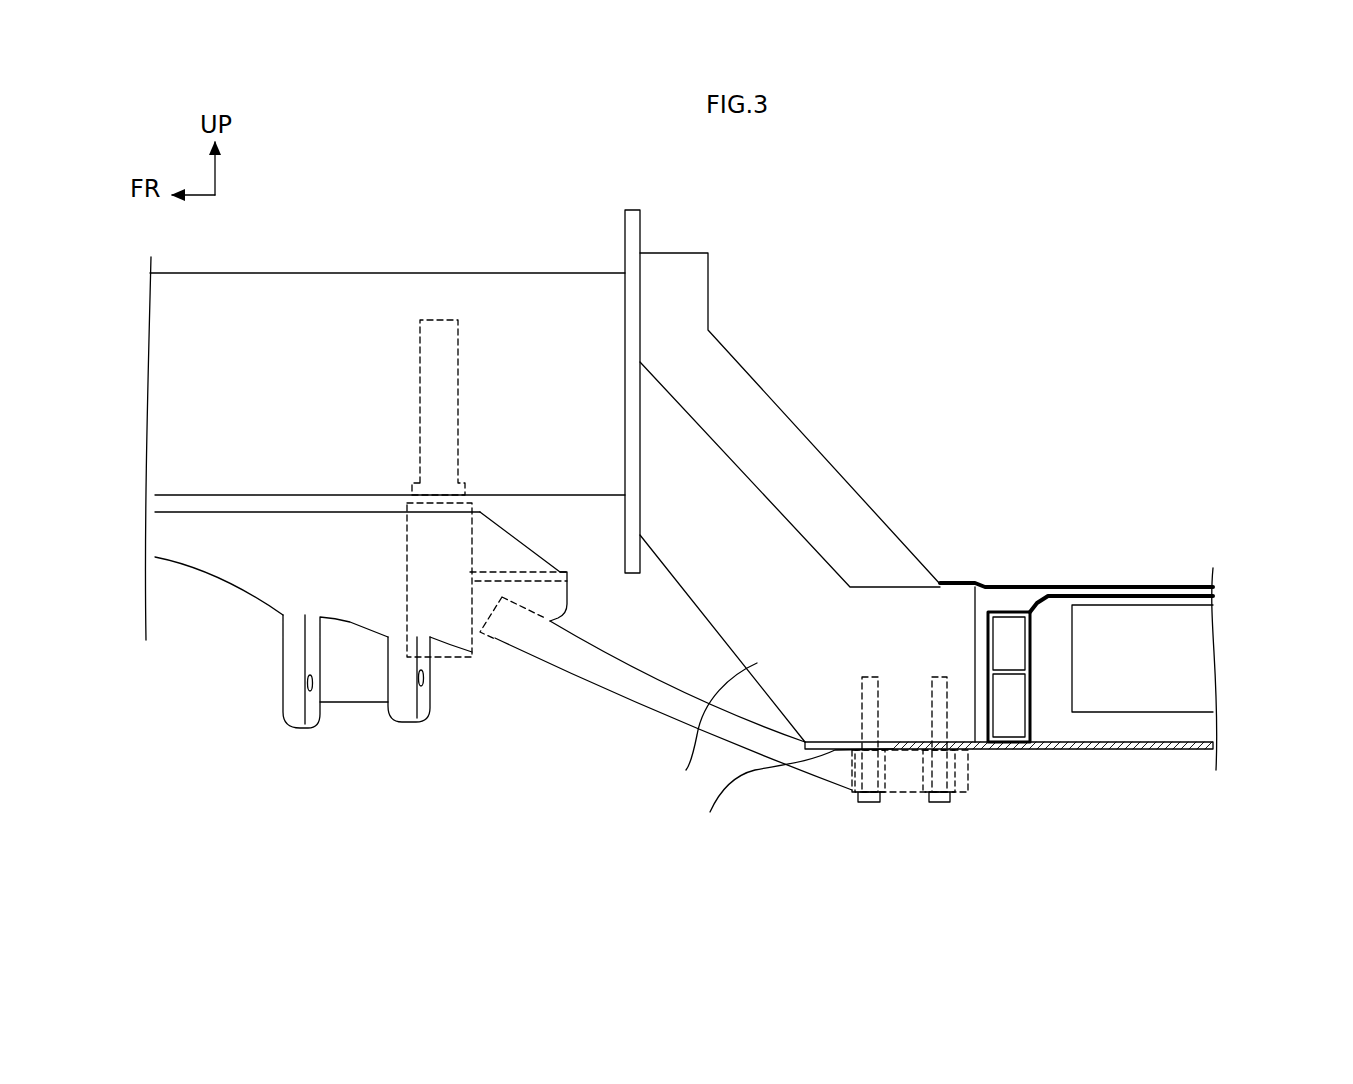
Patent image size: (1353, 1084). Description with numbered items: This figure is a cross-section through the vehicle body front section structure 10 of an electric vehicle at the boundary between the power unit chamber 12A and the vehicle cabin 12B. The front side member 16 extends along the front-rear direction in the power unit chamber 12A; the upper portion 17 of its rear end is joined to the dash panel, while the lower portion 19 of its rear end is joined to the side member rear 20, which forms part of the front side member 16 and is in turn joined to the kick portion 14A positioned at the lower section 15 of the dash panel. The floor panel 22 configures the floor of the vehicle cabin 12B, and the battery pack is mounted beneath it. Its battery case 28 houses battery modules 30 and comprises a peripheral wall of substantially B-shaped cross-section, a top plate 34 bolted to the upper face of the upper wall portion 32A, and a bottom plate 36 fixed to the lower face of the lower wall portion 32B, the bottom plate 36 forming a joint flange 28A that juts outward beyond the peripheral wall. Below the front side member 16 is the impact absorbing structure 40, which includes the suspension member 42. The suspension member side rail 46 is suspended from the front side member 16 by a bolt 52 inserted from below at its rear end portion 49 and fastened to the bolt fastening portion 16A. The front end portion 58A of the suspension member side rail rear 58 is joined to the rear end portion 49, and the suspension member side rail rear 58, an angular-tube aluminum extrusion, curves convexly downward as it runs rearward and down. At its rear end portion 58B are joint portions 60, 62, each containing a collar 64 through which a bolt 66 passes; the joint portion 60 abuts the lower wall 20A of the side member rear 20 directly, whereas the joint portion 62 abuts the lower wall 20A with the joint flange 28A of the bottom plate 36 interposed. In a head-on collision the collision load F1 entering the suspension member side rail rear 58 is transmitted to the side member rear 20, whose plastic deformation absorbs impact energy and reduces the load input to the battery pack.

The vehicle body front section structure 10 is at (897, 237).
The power unit chamber 12A is at (399, 221).
The vehicle cabin 12B is at (1097, 427).
The kick portion 14A is at (791, 414).
The lower section 15 is at (754, 378).
The front side member 16 is at (280, 286).
The bolt fastening portion 16A is at (458, 368).
The upper portion 17 is at (566, 287).
The lower portion 19 is at (572, 490).
The side member rear 20 is at (686, 770).
The lower wall 20A is at (792, 794).
The floor panel 22 is at (1158, 584).
The battery case 28 is at (1024, 780).
The joint flange 28A is at (923, 756).
The battery module 30 is at (1196, 655).
The upper wall portion 32A is at (1028, 650).
The lower wall portion 32B is at (1004, 746).
The top plate 34 is at (1080, 596).
The bottom plate 36 is at (1110, 751).
The impact absorbing structure 40 is at (486, 824).
The suspension member 42 is at (199, 570).
The suspension member side rail 46 is at (240, 577).
The rear end portion 49 is at (540, 594).
The bolt 52 is at (445, 660).
The suspension member side rail rear 58 is at (622, 703).
The front end portion 58A is at (513, 644).
The rear end portion 58B is at (893, 778).
The joint portion 60 is at (852, 765).
The joint portion 62 is at (948, 808).
The collar 64 is at (848, 768).
The bolt 66 is at (859, 806).
The collision load F1 is at (598, 676).